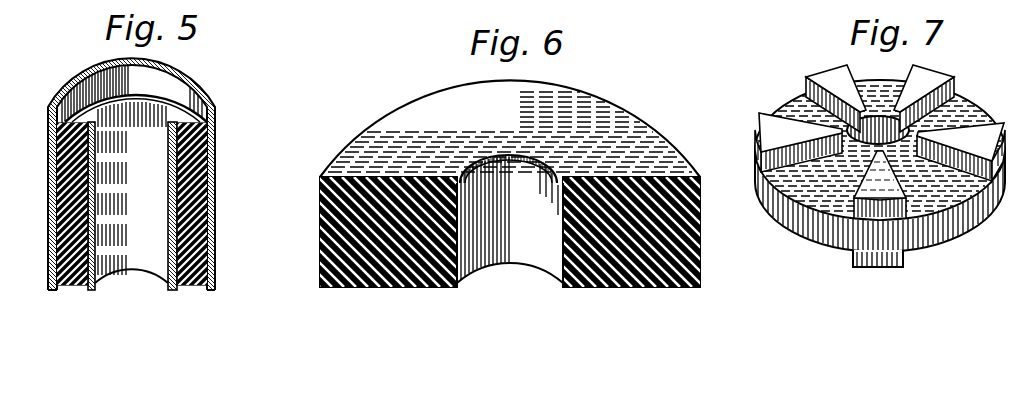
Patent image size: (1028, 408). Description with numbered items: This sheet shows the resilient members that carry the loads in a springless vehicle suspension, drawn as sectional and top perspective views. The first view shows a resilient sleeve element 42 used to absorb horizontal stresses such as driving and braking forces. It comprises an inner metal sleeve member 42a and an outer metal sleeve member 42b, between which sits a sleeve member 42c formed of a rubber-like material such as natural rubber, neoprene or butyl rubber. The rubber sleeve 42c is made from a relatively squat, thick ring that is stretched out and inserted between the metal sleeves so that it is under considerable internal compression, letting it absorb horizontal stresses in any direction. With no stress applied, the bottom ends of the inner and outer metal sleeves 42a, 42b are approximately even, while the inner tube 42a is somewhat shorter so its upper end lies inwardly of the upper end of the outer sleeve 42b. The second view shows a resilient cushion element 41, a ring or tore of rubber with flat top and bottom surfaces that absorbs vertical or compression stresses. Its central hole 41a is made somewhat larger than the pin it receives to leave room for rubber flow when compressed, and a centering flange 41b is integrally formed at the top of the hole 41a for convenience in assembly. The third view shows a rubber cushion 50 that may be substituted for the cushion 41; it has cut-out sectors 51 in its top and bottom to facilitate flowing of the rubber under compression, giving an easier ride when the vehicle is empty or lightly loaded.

In FIG. 6, the resilient cushion element 41 is at (320, 198).
In FIG. 6, the central hole 41a is at (507, 265).
In FIG. 6, the centering flange 41b is at (557, 178).
In FIG. 5, the resilient sleeve element 42 is at (217, 174).
In FIG. 5, the inner metal sleeve member 42a is at (112, 274).
In FIG. 5, the outer metal sleeve member 42b is at (215, 273).
In FIG. 5, the rubber sleeve member 42c is at (187, 285).
In FIG. 7, the rubber cushion 50 is at (824, 64).
In FIG. 7, the cut-out sectors 51 is at (956, 88).